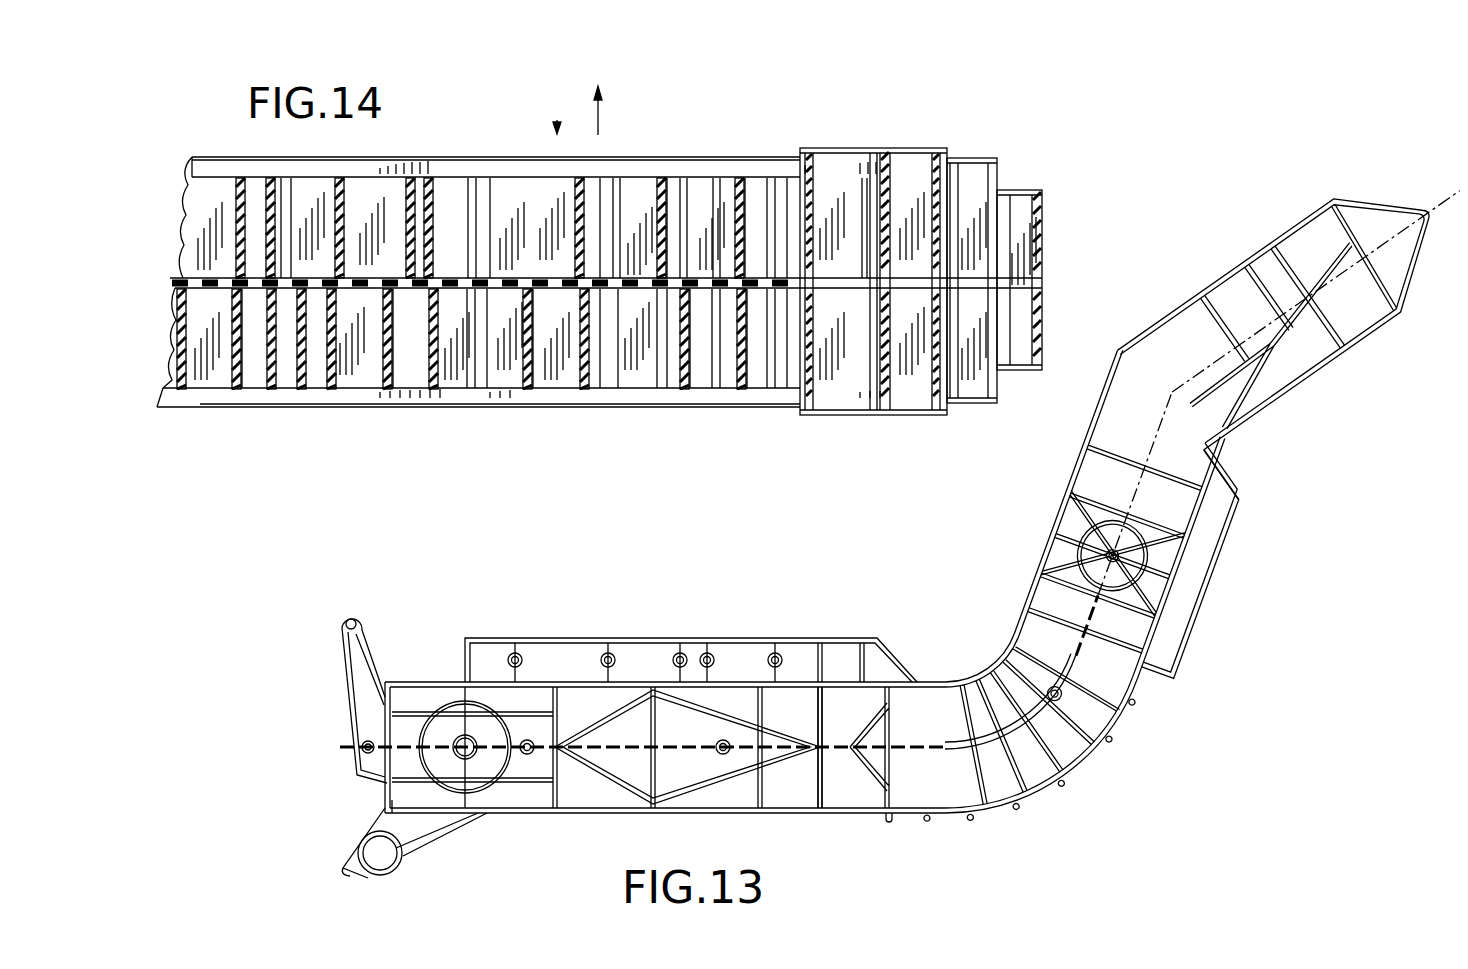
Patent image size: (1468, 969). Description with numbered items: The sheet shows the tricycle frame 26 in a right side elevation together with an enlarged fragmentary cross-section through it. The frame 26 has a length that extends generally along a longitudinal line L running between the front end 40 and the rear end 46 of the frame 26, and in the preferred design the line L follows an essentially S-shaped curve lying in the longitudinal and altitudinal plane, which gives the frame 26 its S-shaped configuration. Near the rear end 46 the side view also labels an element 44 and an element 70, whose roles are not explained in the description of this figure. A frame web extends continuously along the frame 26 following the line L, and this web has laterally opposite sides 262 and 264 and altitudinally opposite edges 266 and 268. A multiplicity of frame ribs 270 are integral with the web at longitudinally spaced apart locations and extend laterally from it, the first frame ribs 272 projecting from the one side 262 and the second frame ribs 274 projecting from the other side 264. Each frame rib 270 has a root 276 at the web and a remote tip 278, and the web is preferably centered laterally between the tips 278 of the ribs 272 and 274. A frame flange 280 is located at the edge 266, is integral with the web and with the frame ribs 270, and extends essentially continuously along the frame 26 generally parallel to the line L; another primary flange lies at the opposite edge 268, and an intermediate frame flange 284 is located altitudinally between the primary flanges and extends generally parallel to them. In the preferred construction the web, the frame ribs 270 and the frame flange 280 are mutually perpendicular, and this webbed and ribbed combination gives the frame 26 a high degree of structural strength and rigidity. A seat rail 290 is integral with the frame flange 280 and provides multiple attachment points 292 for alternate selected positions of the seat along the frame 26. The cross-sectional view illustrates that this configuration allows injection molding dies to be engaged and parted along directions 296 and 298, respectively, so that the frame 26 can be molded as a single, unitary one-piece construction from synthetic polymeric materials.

In FIG. 14, the frame 26 is at (357, 402).
In FIG. 13, the frame 26 is at (1106, 752).
In FIG. 13, the front end 40 is at (1428, 214).
In FIG. 13, the drive sprocket 44 is at (470, 752).
In FIG. 13, the rear end 46 is at (378, 790).
In FIG. 13, the roller 70 is at (343, 868).
In FIG. 14, the side 262 is at (612, 250).
In FIG. 14, the side 264 is at (638, 285).
In FIG. 13, the side 264 is at (848, 712).
In FIG. 13, the edge 266 is at (948, 680).
In FIG. 13, the edge 268 is at (912, 818).
In FIG. 14, the frame ribs 270 is at (721, 382).
In FIG. 13, the frame ribs 270 is at (820, 795).
In FIG. 14, the first frame ribs 272 is at (752, 195).
In FIG. 14, the second frame ribs 274 is at (752, 382).
In FIG. 14, the root 276 is at (722, 268).
In FIG. 14, the remote tip 278 is at (742, 238).
In FIG. 13, the frame flange 280 is at (1077, 468).
In FIG. 13, the intermediate frame flange 284 is at (1020, 762).
In FIG. 13, the seat rail 290 is at (462, 678).
In FIG. 13, the attachment points 292 is at (712, 655).
In FIG. 14, the direction 296 is at (557, 120).
In FIG. 14, the direction 298 is at (602, 110).
In FIG. 13, the longitudinal line L is at (1400, 225).